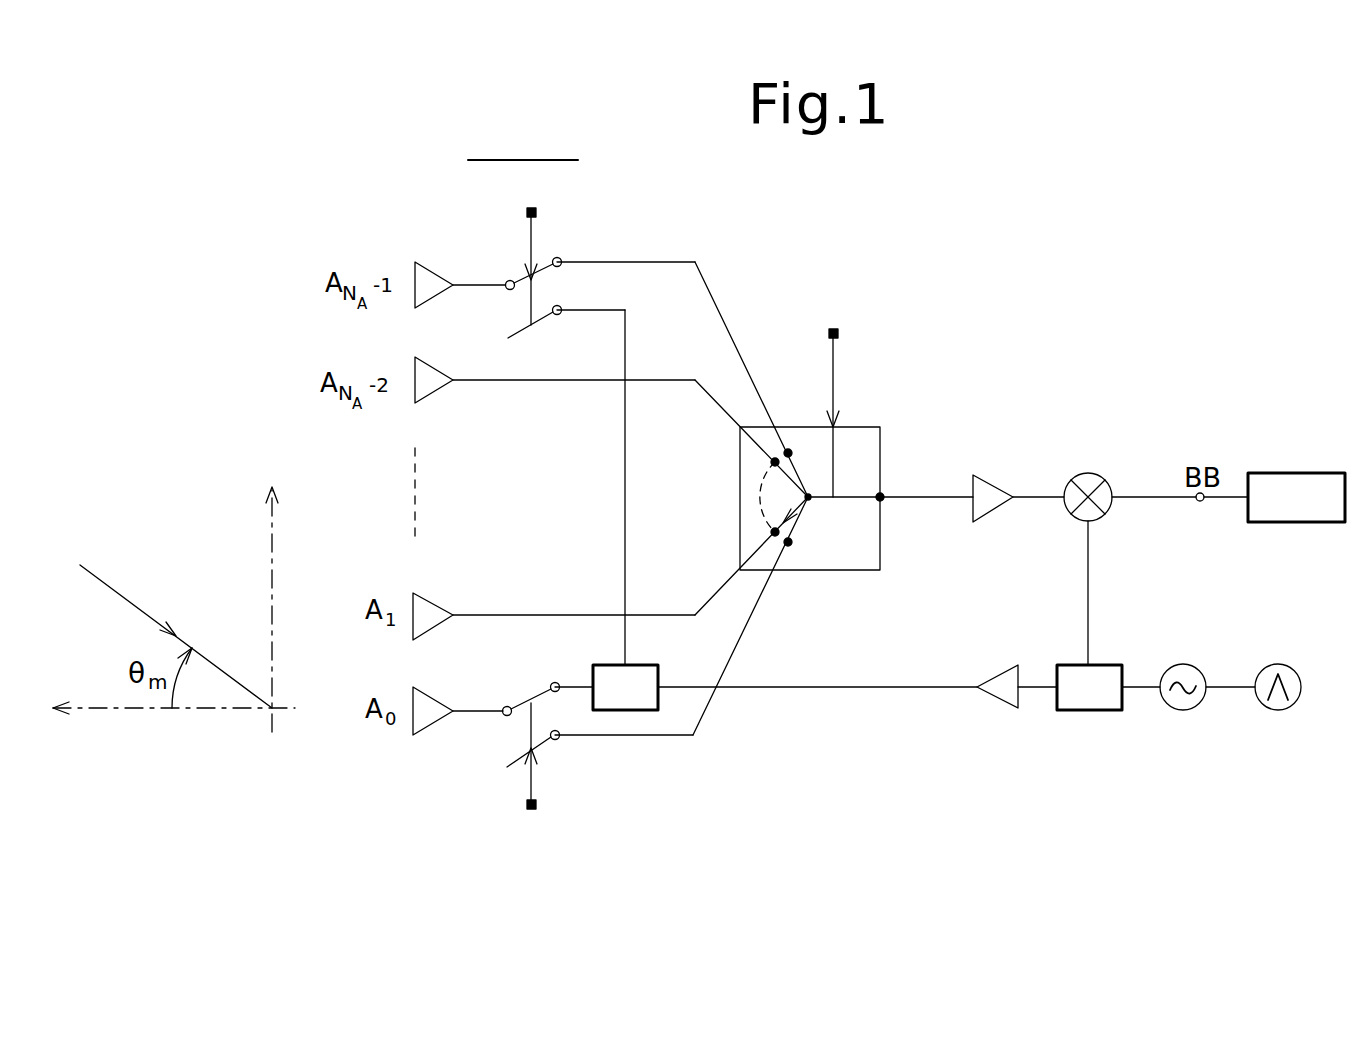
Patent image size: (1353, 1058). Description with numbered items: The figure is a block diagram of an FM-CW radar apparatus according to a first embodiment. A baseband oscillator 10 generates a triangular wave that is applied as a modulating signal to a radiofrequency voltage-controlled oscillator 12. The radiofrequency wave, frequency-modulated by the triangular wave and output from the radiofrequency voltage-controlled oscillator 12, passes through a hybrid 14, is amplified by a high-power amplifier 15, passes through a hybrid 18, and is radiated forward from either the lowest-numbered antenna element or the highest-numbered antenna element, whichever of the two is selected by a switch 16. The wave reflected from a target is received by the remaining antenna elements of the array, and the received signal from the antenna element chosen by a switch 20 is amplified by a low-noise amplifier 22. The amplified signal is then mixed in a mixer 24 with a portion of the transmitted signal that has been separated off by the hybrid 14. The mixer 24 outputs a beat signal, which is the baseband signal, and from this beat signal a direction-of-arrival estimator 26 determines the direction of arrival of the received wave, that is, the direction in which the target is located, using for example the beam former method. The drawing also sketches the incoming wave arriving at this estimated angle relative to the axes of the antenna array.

The baseband oscillator 10 is at (1277, 710).
The radiofrequency voltage-controlled oscillator 12 is at (1178, 710).
The hybrid 14 is at (1080, 710).
The high-power amplifier 15 is at (997, 700).
The switch 16 is at (564, 246).
The hybrid 18 is at (635, 665).
The switch 20 is at (867, 438).
The low-noise amplifier 22 is at (992, 513).
The mixer 24 is at (1112, 511).
The direction-of-arrival estimator 26 is at (1290, 473).